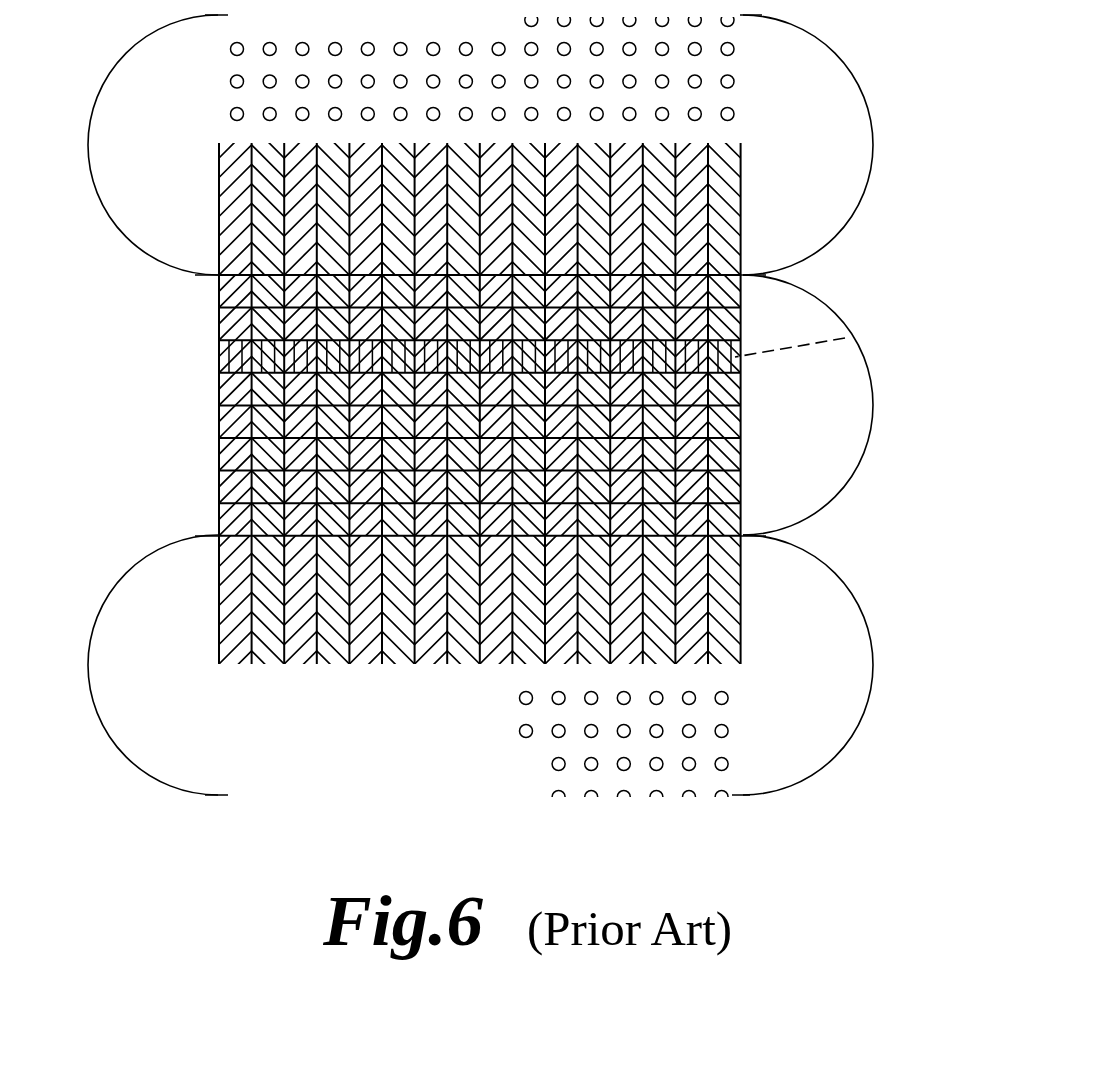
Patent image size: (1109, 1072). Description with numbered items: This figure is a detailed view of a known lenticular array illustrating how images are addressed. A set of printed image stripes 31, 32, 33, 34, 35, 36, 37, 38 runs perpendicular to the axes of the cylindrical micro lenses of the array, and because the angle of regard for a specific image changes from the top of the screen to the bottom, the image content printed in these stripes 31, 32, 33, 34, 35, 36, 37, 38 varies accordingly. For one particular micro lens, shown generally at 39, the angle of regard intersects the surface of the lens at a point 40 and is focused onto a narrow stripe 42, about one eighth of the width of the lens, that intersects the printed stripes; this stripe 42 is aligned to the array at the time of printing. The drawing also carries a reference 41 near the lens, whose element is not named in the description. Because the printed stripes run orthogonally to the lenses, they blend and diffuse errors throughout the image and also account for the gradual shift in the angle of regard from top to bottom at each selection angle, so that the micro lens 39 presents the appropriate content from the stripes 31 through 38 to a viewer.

The stripe 31 is at (232, 665).
The stripe 32 is at (265, 665).
The stripe 33 is at (297, 665).
The stripe 34 is at (330, 665).
The stripe 35 is at (363, 665).
The stripe 36 is at (396, 665).
The stripe 37 is at (428, 665).
The stripe 38 is at (461, 665).
The micro lens 39 is at (865, 475).
The point 40 is at (848, 337).
The lobe interior 41 is at (813, 343).
The stripe 42 is at (658, 363).